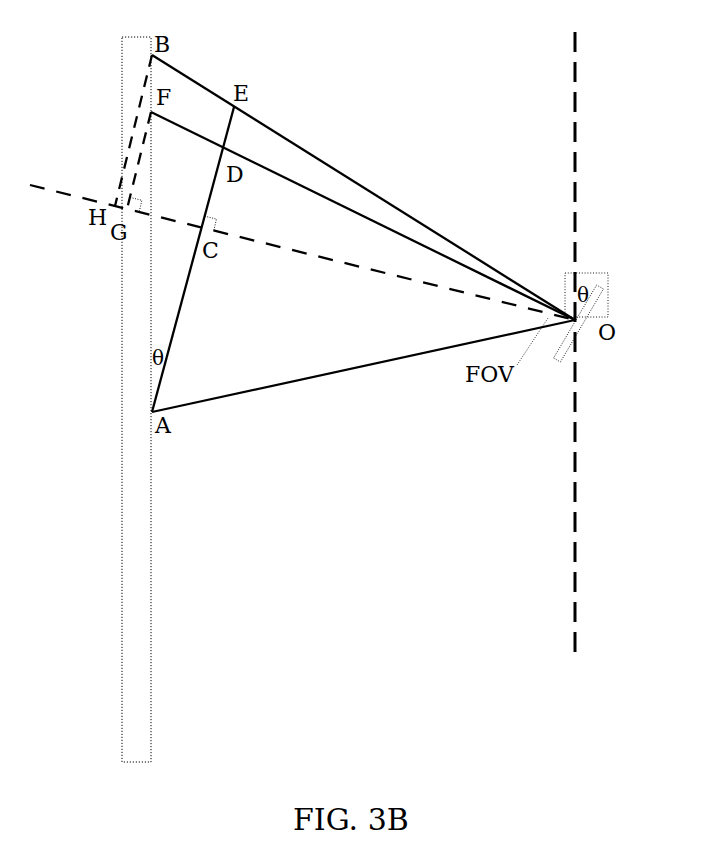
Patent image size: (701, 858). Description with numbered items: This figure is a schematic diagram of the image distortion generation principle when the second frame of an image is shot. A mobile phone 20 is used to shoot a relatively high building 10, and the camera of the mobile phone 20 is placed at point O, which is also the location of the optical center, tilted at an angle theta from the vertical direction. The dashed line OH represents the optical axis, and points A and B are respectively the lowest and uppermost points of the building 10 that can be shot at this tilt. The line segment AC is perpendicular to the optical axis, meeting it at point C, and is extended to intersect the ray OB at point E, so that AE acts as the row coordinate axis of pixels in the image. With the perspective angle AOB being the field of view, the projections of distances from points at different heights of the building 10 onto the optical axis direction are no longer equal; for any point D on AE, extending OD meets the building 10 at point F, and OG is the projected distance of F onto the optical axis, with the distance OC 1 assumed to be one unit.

The building 10 is at (121, 597).
The mobile phone 20 is at (590, 343).
The optical axis line 1 is at (302, 252).